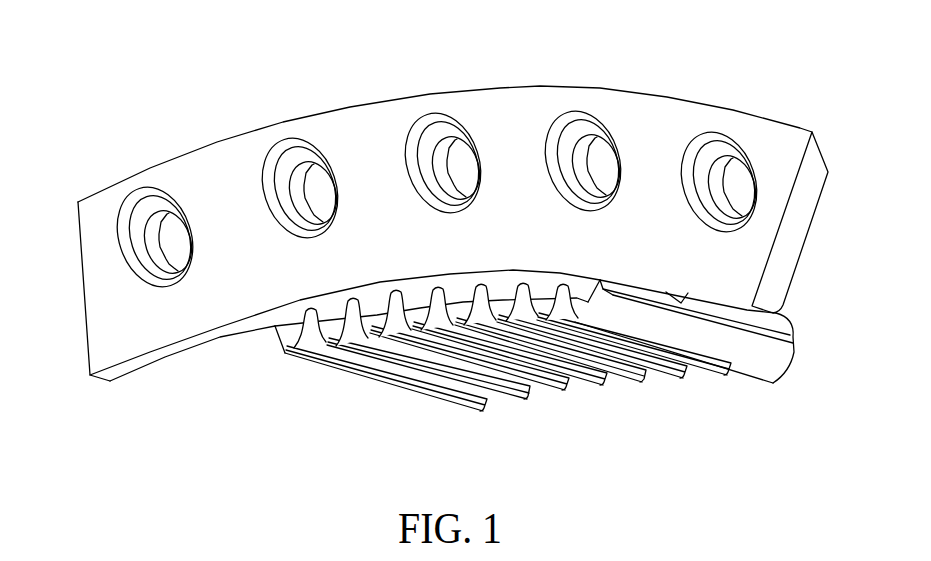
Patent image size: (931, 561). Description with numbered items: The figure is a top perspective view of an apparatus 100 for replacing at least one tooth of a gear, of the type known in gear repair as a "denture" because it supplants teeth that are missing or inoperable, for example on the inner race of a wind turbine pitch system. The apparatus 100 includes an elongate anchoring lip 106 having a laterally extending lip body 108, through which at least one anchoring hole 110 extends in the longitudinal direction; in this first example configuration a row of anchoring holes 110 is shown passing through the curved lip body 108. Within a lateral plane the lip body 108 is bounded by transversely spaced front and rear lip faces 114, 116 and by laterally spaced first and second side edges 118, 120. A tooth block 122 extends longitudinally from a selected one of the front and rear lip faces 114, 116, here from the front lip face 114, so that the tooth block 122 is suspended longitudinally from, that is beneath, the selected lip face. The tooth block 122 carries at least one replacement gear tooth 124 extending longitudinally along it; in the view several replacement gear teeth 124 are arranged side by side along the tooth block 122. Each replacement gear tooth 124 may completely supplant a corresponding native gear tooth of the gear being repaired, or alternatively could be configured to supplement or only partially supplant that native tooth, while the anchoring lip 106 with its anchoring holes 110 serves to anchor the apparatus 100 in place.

The apparatus 100 is at (451, 243).
The anchoring lip 106 is at (448, 227).
The lip body 108 is at (222, 292).
The anchoring hole 110 is at (303, 187).
The front lip face 114 is at (126, 367).
The rear lip face 116 is at (667, 96).
The first side edge 118 is at (82, 288).
The second side edge 120 is at (790, 233).
The tooth block 122 is at (553, 374).
The replacement gear tooth 124 is at (598, 387).